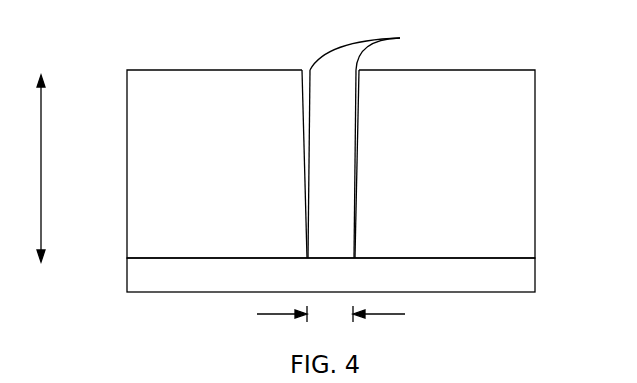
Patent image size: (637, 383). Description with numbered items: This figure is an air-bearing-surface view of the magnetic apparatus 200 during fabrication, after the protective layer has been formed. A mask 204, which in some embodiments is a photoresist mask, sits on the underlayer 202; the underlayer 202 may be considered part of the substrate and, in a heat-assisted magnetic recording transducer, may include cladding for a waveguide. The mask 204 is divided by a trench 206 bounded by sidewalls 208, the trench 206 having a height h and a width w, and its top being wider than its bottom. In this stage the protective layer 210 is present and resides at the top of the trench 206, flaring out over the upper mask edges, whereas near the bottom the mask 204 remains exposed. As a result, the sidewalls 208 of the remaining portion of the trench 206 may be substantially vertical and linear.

The magnetic apparatus 200 is at (48, 31).
The underlayer 202 is at (331, 275).
The mask 204 is at (331, 164).
The trench 206 is at (313, 51).
The sidewalls 208 is at (281, 225).
The protective layer 210 is at (400, 38).